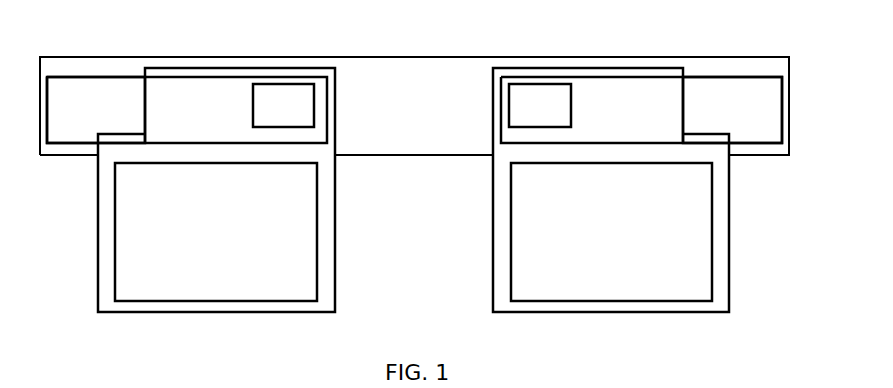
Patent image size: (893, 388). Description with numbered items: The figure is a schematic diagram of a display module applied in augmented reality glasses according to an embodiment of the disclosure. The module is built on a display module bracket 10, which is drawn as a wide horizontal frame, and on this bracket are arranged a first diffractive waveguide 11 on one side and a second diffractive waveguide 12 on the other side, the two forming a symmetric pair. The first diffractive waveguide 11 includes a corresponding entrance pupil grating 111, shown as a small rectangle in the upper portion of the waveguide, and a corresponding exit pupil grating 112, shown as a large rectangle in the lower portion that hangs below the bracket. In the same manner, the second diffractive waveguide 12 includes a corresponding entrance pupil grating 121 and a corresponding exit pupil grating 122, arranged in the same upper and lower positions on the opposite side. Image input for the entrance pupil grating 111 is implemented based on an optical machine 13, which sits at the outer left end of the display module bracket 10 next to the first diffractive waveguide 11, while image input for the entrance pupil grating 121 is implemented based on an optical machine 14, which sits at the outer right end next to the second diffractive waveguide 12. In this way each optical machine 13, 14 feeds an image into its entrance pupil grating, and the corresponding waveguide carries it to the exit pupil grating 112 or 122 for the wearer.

The display module bracket 10 is at (435, 57).
The first diffractive waveguide 11 is at (240, 68).
The entrance pupil grating 111 is at (281, 84).
The exit pupil grating 112 is at (315, 194).
The second diffractive waveguide 12 is at (593, 68).
The entrance pupil grating 121 is at (520, 84).
The exit pupil grating 122 is at (493, 194).
The optical machine 13 is at (72, 77).
The optical machine 14 is at (697, 77).